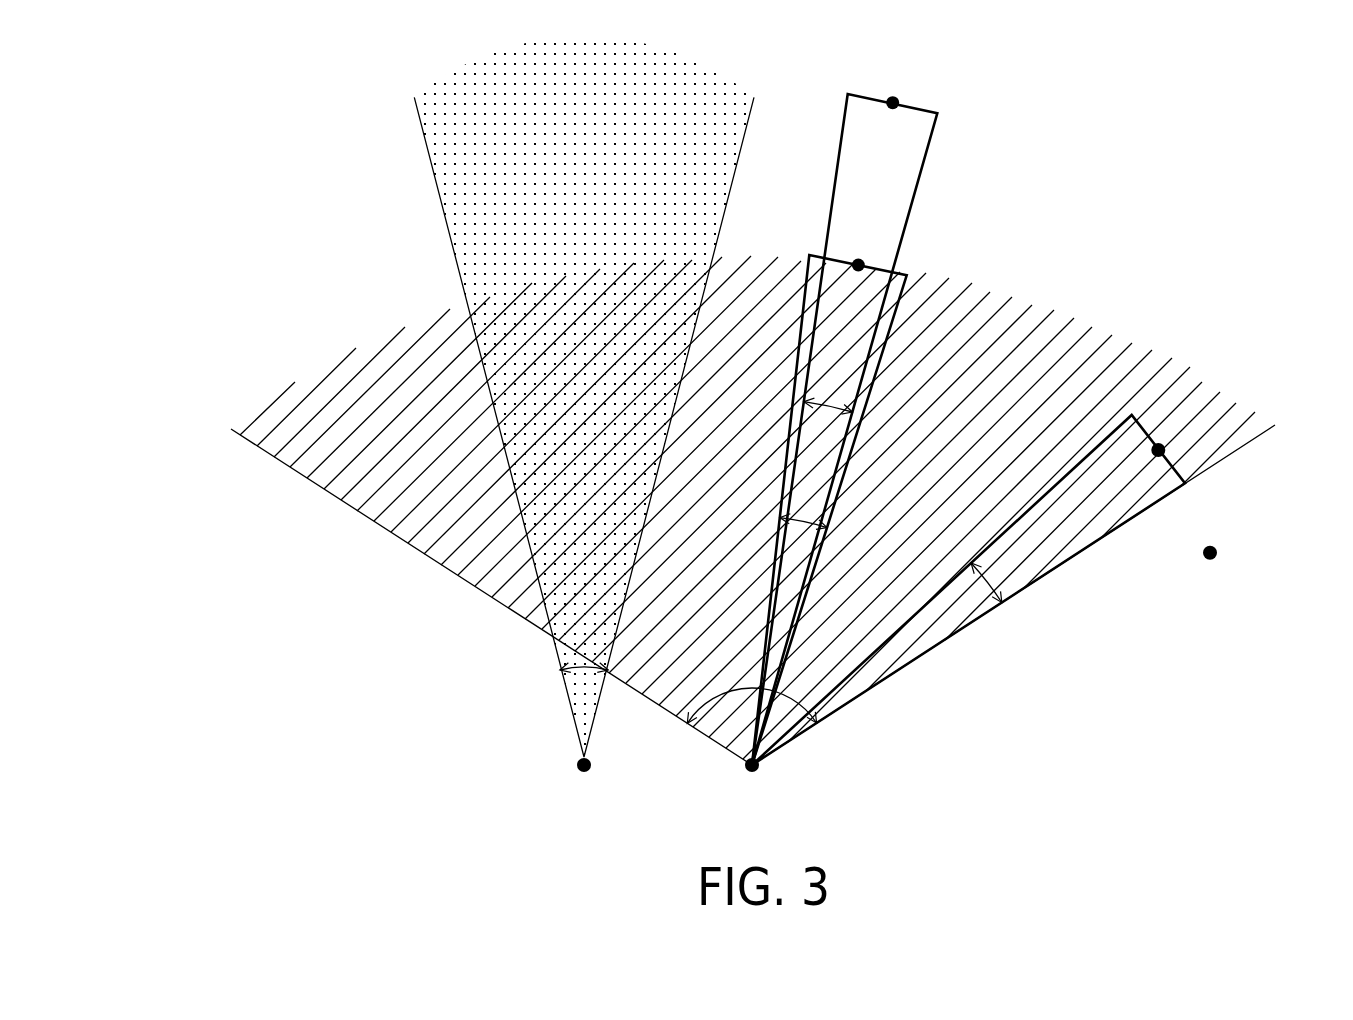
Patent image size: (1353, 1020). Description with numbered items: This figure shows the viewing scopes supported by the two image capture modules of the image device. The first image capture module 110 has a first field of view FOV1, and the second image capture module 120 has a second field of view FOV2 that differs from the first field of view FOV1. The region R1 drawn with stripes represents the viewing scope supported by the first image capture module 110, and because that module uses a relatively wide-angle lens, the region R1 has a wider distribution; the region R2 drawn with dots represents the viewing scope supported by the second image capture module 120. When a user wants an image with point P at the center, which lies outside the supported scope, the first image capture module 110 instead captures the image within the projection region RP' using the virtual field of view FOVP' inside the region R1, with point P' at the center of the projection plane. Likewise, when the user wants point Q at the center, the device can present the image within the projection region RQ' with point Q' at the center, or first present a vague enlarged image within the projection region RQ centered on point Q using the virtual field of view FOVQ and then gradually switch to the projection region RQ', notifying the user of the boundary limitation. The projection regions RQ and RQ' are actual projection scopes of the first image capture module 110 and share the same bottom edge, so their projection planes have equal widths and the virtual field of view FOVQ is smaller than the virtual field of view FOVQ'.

The first image capture module 110 is at (752, 785).
The second image capture module 120 is at (584, 785).
The region with stripes R1 is at (893, 597).
The region with dots R2 is at (690, 157).
The projection region RQ is at (878, 429).
The projection region RQ' is at (899, 501).
The projection region RP' is at (968, 590).
The point Q is at (901, 83).
The point Q' is at (854, 289).
The point P is at (1216, 576).
The point P' is at (1171, 436).
The first field of view FOV1 is at (749, 690).
The second field of view FOV2 is at (567, 688).
The virtual field of view FOVQ is at (880, 425).
The virtual field of view FOVQ' is at (856, 543).
The virtual field of view FOVP' is at (1012, 614).